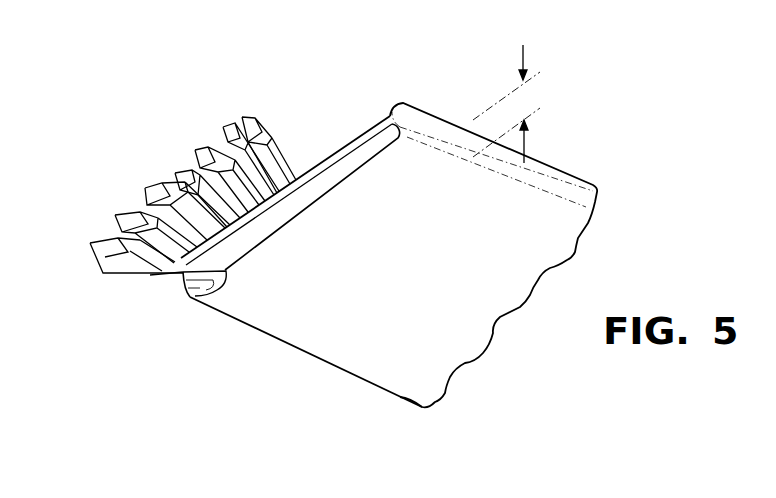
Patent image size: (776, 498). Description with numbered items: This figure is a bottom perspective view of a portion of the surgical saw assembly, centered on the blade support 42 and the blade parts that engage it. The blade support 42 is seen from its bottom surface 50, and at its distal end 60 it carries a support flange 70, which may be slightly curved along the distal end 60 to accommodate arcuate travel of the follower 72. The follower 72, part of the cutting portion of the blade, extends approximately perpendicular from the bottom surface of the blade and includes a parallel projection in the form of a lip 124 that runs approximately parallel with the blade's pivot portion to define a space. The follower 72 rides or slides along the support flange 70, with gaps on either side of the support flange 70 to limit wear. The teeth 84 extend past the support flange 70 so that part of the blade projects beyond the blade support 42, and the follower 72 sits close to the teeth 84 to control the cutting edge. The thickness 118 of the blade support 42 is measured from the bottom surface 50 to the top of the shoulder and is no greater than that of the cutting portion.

The blade support 42 is at (308, 368).
The bottom surface 50 is at (393, 257).
The distal end 60 is at (338, 148).
The support flange 70 is at (372, 138).
The follower 72 is at (190, 297).
The teeth 84 is at (143, 197).
The thickness 118 is at (523, 60).
The lip 124 is at (300, 192).